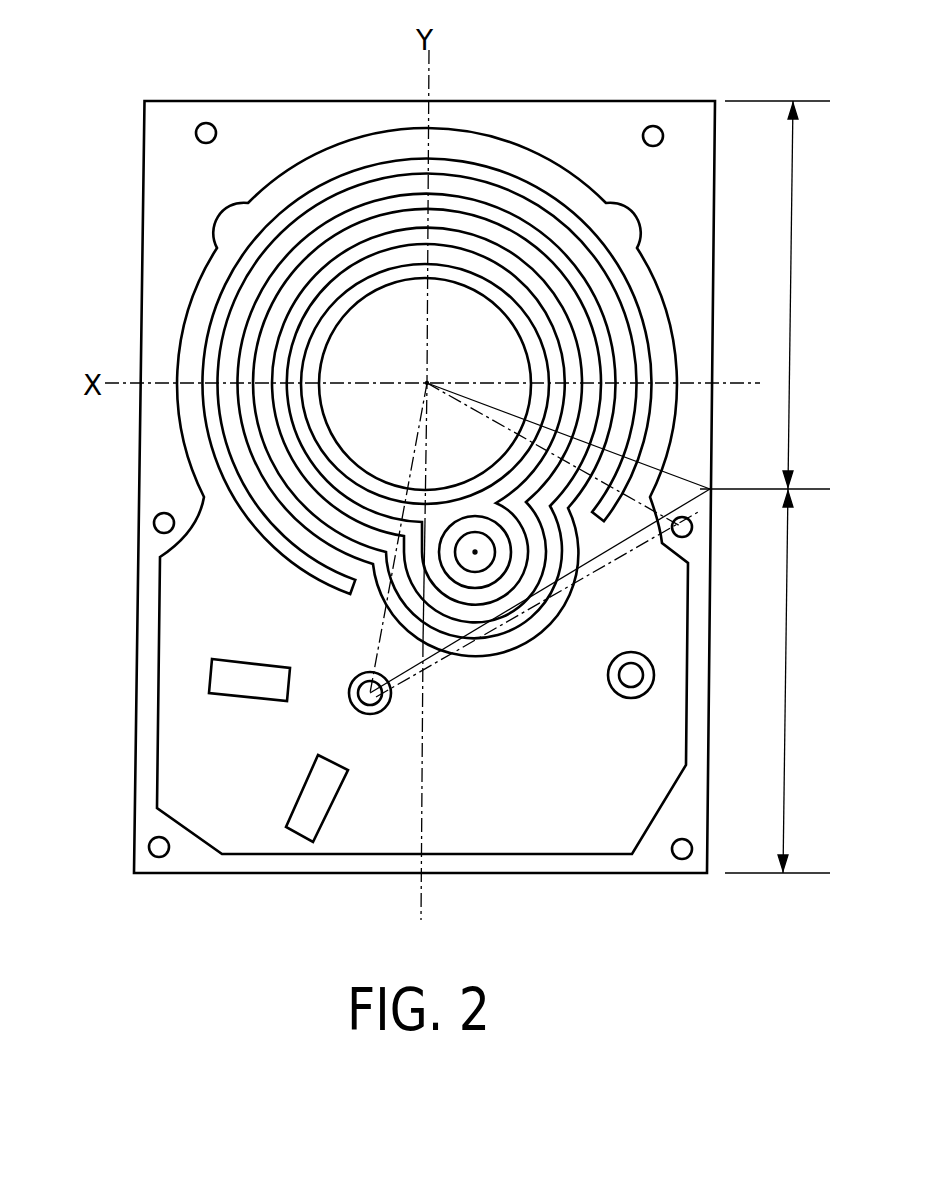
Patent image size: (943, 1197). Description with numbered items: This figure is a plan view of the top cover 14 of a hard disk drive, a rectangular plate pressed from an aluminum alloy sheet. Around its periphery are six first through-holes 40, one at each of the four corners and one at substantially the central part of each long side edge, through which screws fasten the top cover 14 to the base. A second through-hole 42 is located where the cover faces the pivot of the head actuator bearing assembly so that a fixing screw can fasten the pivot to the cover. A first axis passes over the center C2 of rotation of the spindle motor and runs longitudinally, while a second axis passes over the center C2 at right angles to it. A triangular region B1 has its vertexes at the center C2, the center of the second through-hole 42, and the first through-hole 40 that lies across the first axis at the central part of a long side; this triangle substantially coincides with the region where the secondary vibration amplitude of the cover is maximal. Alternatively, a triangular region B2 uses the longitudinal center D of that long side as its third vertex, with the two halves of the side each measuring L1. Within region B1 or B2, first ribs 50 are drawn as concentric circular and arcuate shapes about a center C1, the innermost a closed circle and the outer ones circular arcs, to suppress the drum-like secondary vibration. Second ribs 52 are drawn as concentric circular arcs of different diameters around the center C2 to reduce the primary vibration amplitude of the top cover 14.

The top cover 14 is at (175, 215).
The first through-holes 40 is at (196, 135).
The second through-hole 42 is at (372, 714).
The first ribs 50 is at (528, 562).
The second ribs 52 is at (402, 233).
The center of the first ribs C1 is at (470, 558).
The center of rotation of the spindle motor C2 is at (425, 381).
The triangular region B1 is at (617, 567).
The triangular region B2 is at (672, 442).
The longitudinal center of the long side D is at (712, 491).
The length L1 is at (767, 487).